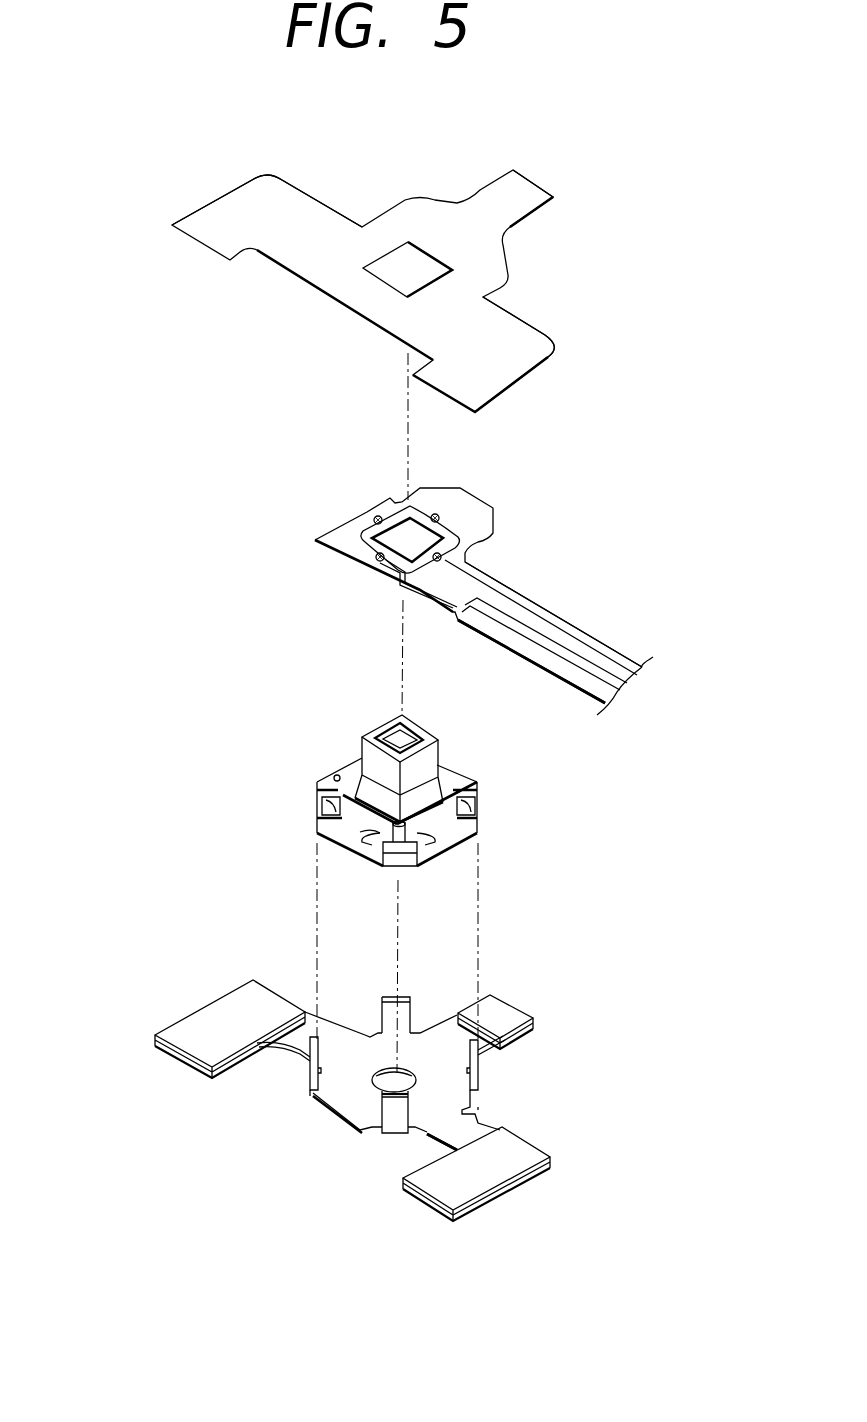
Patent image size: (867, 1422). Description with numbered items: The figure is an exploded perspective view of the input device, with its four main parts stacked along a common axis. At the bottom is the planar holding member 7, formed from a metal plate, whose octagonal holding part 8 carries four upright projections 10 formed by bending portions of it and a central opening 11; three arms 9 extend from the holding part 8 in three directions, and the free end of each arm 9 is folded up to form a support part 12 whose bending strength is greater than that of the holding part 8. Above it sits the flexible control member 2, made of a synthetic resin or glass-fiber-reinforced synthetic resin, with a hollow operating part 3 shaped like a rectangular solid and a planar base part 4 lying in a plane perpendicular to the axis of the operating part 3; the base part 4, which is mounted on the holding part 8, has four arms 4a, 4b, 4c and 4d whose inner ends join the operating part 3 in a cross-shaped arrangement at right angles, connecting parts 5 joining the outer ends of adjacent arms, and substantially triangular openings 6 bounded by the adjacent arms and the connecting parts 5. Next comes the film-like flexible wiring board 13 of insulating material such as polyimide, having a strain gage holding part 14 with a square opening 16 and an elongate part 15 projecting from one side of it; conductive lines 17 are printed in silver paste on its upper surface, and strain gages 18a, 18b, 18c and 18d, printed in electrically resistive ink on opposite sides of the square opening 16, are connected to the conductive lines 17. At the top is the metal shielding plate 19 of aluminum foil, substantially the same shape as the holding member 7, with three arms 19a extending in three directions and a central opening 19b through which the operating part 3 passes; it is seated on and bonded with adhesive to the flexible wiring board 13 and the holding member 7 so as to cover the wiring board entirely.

The control member 2 is at (364, 789).
The operating part 3 is at (428, 757).
The base part 4 is at (364, 764).
The arm 4a is at (353, 825).
The arm 4b is at (450, 778).
The arm 4c is at (440, 825).
The arm 4d is at (353, 777).
The connecting part 5 is at (320, 803).
The opening 6 is at (335, 778).
The holding member 7 is at (366, 1093).
The holding part 8 is at (347, 1098).
The arm 9 is at (300, 1040).
The upright projection 10 is at (410, 1010).
The central opening 11 is at (382, 1070).
The support part 12 is at (240, 1003).
The flexible wiring board 13 is at (438, 588).
The strain gage holding part 14 is at (338, 545).
The elongate part 15 is at (560, 677).
The square opening 16 is at (363, 520).
The conductive line 17 is at (488, 577).
The strain gage 18a is at (377, 560).
The strain gage 18b is at (440, 518).
The strain gage 18c is at (447, 543).
The strain gage 18d is at (373, 518).
The shielding plate 19 is at (465, 202).
The arm 19a is at (288, 200).
The central opening 19b is at (395, 283).